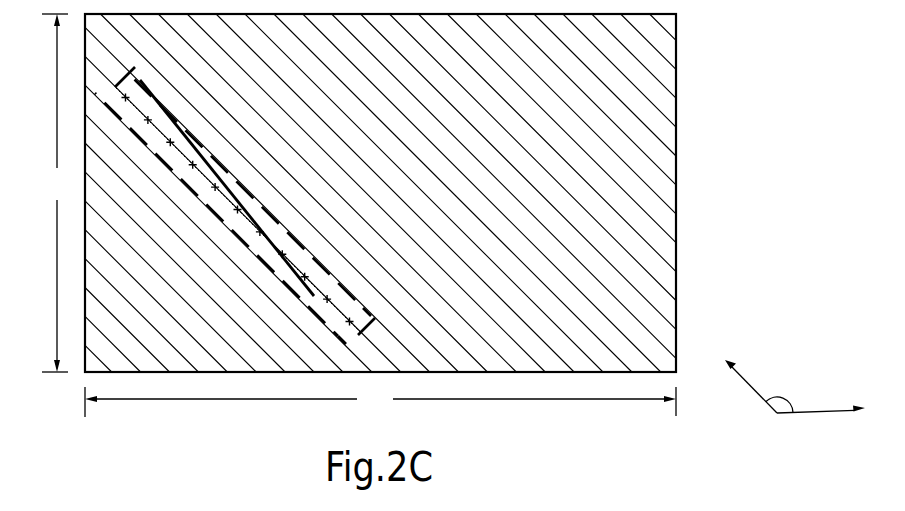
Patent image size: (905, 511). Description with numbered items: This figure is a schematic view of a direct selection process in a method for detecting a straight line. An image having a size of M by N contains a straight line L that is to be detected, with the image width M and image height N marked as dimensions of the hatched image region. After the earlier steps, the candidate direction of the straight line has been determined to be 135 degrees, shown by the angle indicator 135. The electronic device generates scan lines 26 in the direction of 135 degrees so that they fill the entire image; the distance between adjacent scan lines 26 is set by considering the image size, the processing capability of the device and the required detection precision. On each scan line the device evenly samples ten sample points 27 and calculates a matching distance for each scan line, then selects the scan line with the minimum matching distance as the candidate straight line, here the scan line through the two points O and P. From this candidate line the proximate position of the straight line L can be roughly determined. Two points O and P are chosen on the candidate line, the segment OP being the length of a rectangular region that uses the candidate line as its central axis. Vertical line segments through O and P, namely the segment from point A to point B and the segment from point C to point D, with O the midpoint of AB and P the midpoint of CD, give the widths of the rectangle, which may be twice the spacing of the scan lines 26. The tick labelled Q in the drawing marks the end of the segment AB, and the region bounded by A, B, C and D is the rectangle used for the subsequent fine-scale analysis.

The scan lines 26 is at (529, 95).
The sample points 27 is at (304, 276).
The point A is at (212, 213).
The point B is at (245, 180).
The point C is at (341, 349).
The point D is at (376, 322).
The straight line L is at (239, 211).
The image width M is at (380, 402).
The image height N is at (55, 193).
The point P is at (366, 334).
The point Q on start tick Q is at (117, 77).
The candidate direction angle 135 is at (795, 386).